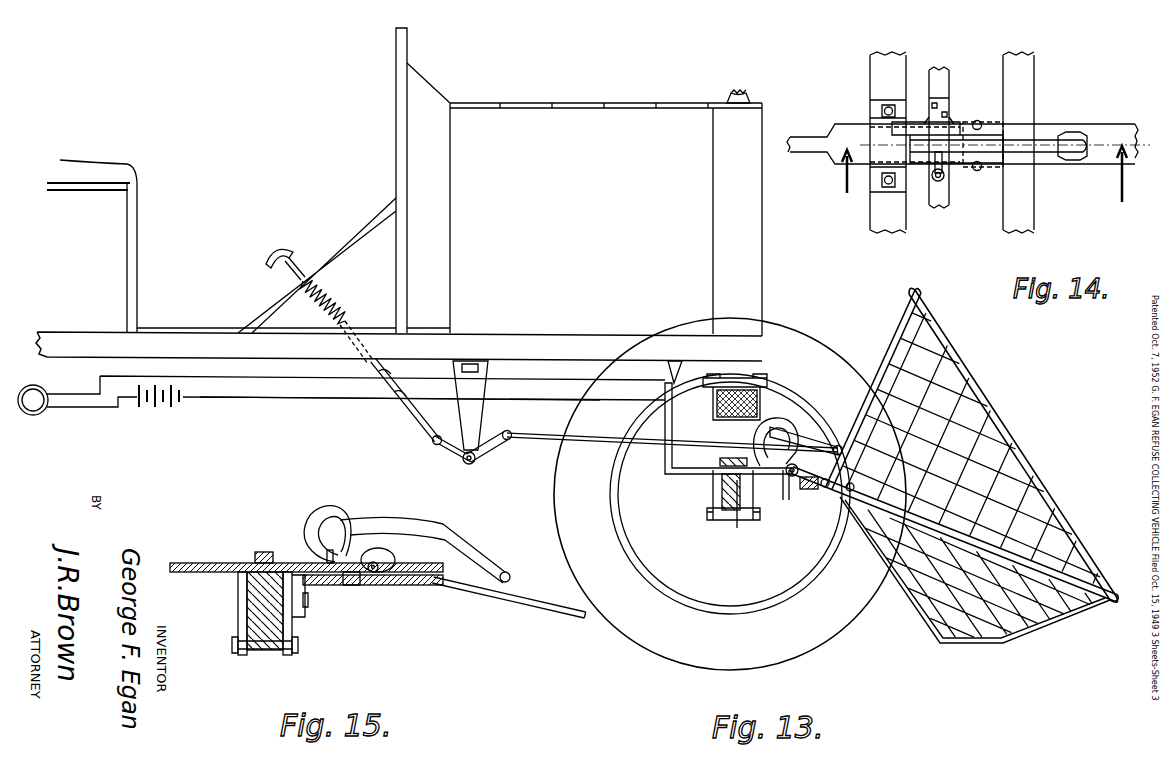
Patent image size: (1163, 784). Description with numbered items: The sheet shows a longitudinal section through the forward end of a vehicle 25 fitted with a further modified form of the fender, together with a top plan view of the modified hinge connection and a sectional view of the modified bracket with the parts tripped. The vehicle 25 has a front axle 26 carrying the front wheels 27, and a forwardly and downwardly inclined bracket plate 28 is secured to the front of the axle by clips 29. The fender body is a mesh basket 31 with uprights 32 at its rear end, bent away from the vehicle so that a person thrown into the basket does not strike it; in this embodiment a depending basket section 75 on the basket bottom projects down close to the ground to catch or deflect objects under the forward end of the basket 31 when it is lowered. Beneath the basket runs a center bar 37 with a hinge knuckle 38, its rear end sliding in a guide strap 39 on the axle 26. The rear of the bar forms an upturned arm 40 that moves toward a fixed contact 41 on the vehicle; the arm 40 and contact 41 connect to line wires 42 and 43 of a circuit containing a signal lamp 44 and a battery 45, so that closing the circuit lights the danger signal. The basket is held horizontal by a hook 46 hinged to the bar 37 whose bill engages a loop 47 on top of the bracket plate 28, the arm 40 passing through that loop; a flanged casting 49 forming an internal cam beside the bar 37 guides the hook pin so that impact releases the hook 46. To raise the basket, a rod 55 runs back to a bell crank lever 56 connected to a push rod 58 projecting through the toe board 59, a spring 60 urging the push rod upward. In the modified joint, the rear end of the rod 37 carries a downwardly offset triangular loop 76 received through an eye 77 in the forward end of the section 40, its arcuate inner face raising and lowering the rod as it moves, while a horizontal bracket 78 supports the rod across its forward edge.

In FIG. 13, the vehicle 25 is at (541, 125).
In FIG. 13, the front axle 26 is at (740, 522).
In FIG. 15, the front axle 26 is at (262, 628).
In FIG. 13, the front wheels 27 is at (567, 500).
In FIG. 13, the bracket plate 28 is at (799, 480).
In FIG. 13, the clips 29 is at (713, 493).
In FIG. 15, the clips 29 is at (238, 622).
In FIG. 13, the basket 31 is at (1013, 467).
In FIG. 13, the uprights 32 is at (887, 340).
In FIG. 13, the center bar 37 is at (920, 526).
In FIG. 15, the center bar 37 is at (522, 590).
In FIG. 13, the hinge knuckle 38 is at (785, 505).
In FIG. 15, the guide strap 39 is at (258, 560).
In FIG. 13, the upturned arm 40 is at (672, 425).
In FIG. 15, the upturned arm 40 is at (185, 563).
In FIG. 13, the fixed contact 41 is at (678, 370).
In FIG. 13, the line wire 42 is at (276, 378).
In FIG. 14, the line wire 42 is at (1024, 162).
In FIG. 13, the line wire 43 is at (328, 399).
In FIG. 14, the line wire 43 is at (895, 157).
In FIG. 13, the signal lamp 44 is at (40, 412).
In FIG. 13, the battery 45 is at (157, 408).
In FIG. 13, the hook 46 is at (805, 430).
In FIG. 15, the hook 46 is at (380, 515).
In FIG. 15, the loop 47 is at (325, 557).
In FIG. 13, the flanged casting 49 is at (782, 437).
In FIG. 15, the flanged casting 49 is at (337, 512).
In FIG. 13, the rod 55 is at (540, 435).
In FIG. 13, the bell crank lever 56 is at (487, 450).
In FIG. 13, the push rod 58 is at (412, 412).
In FIG. 13, the toe board 59 is at (330, 258).
In FIG. 13, the spring 60 is at (322, 289).
In FIG. 13, the depending basket section 75 is at (1013, 623).
In FIG. 15, the downwardly offset loop 76 is at (377, 580).
In FIG. 15, the eye 77 is at (350, 586).
In FIG. 15, the bracket 78 is at (425, 585).